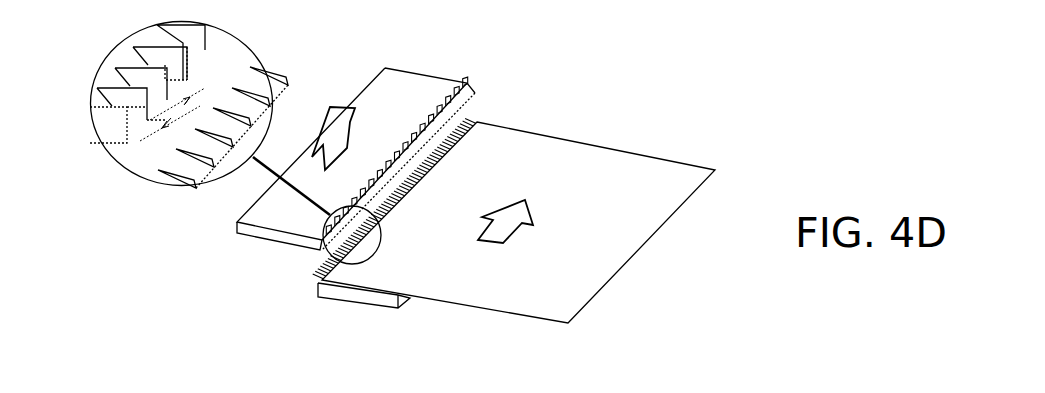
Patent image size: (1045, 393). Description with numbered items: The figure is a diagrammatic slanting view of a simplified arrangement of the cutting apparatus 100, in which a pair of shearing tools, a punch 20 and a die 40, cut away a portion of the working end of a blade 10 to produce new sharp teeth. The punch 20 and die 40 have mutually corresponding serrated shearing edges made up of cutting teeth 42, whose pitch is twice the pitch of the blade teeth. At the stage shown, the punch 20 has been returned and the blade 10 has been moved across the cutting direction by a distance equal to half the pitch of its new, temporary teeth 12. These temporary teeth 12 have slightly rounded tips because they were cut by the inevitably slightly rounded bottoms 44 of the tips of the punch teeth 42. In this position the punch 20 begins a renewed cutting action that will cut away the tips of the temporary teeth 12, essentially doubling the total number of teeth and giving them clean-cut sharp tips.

The blade 10 is at (577, 153).
The temporary teeth 12 is at (172, 152).
The punch 20 is at (362, 110).
The die 40 is at (350, 302).
The cutting teeth 42 is at (153, 72).
The rounded bottoms 44 is at (97, 88).
The cutting apparatus 100 is at (273, 297).